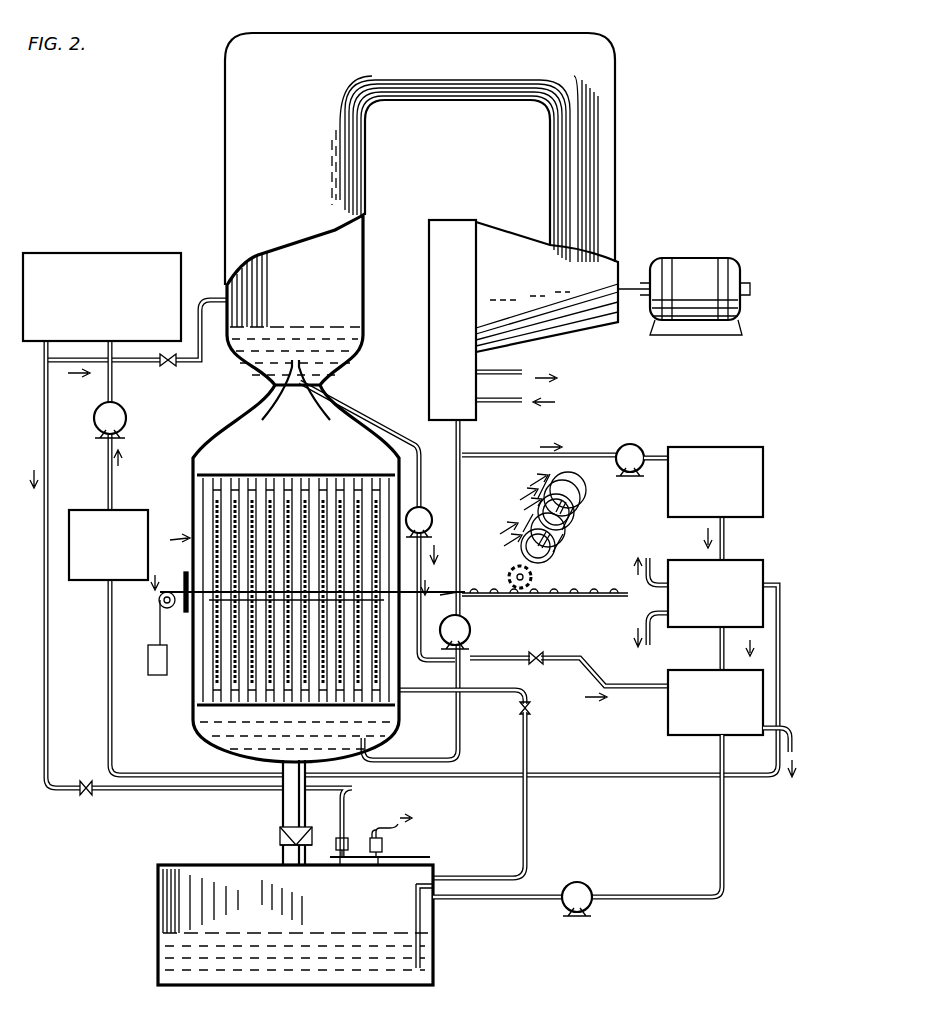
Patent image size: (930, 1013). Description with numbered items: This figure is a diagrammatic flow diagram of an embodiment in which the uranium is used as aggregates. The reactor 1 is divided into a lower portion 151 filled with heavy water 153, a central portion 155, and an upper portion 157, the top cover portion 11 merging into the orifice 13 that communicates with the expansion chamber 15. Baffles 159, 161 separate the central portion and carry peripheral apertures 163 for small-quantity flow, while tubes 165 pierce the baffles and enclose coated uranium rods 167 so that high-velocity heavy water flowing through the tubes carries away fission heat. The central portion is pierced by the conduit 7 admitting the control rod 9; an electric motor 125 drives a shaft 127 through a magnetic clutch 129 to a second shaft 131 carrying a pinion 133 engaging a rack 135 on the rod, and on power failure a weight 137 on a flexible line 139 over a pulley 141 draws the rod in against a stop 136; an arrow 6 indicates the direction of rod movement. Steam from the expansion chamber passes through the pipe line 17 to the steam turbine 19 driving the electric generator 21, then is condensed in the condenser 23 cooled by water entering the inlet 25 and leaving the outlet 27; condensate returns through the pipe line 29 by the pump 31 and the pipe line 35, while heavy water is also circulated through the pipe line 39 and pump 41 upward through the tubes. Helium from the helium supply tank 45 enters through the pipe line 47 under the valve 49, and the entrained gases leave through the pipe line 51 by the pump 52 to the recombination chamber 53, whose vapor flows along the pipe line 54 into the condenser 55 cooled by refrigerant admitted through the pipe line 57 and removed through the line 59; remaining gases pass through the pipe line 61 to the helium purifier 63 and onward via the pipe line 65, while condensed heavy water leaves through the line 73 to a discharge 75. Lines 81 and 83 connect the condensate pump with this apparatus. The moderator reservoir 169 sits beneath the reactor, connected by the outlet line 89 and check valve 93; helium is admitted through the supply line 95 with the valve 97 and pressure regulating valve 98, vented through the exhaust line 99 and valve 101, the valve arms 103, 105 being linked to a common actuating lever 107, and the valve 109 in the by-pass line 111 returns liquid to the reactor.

The reactor 1 is at (172, 540).
The direction arrow 6 is at (278, 578).
The conduit 7 is at (192, 612).
The control rod 9 is at (452, 594).
The top cover portion 11 is at (286, 576).
The orifice 13 is at (296, 362).
The expansion chamber 15 is at (366, 244).
The pipe line 17 is at (508, 52).
The steam turbine 19 is at (490, 232).
The electric generator 21 is at (735, 262).
The condenser 23 is at (440, 272).
The inlet 25 is at (500, 402).
The outlet 27 is at (525, 372).
The pipe line 29 is at (421, 458).
The pump 31 is at (471, 631).
The pipe line 35 is at (470, 690).
The pipe line 39 is at (352, 405).
The pump 41 is at (430, 500).
The helium supply tank 45 is at (154, 264).
The pipe line 47 is at (154, 364).
The valve 49 is at (172, 362).
The pipe line 51 is at (510, 445).
The pump 52 is at (640, 448).
The recombination chamber 53 is at (712, 452).
The pipe line 54 is at (728, 540).
The condenser 55 is at (704, 620).
The pipe line 57 is at (648, 641).
The line 59 is at (656, 560).
The pipe line 61 is at (108, 710).
The helium purifier 63 is at (95, 583).
The pipe line 65 is at (97, 410).
The line 73 is at (728, 656).
The discharge pipe 75 is at (782, 740).
The pipe 81 is at (500, 657).
The valve 83 is at (539, 655).
The outlet line 89 is at (282, 808).
The check valve 93 is at (279, 835).
The supply line 95 is at (50, 656).
The valve 97 is at (350, 840).
The pressure regulating valve 98 is at (88, 792).
The exhaust line 99 is at (400, 828).
The valve 101 is at (396, 836).
The valve arm 103 is at (338, 840).
The valve arm 105 is at (384, 845).
The actuating lever 107 is at (420, 857).
The valve 109 is at (532, 709).
The by-pass line 111 is at (531, 832).
The electric motor 125 is at (577, 504).
The shaft 127 is at (568, 523).
The magnetic clutch 129 is at (558, 548).
The second shaft 131 is at (542, 574).
The pinion 133 is at (508, 578).
The rack 135 is at (602, 584).
The stop 136 is at (184, 576).
The weight 137 is at (148, 660).
The flexible line 139 is at (159, 628).
The pulley 141 is at (159, 602).
The lower portion 151 is at (195, 726).
The heavy water 153 is at (240, 742).
The central portion 155 is at (198, 682).
The upper portion 157 is at (214, 446).
The baffle 159 is at (277, 707).
The baffle 161 is at (258, 480).
The apertures 163 is at (198, 472).
The tubes 165 is at (314, 480).
The coated uranium rods 167 is at (216, 508).
The moderator reservoir 169 is at (158, 905).